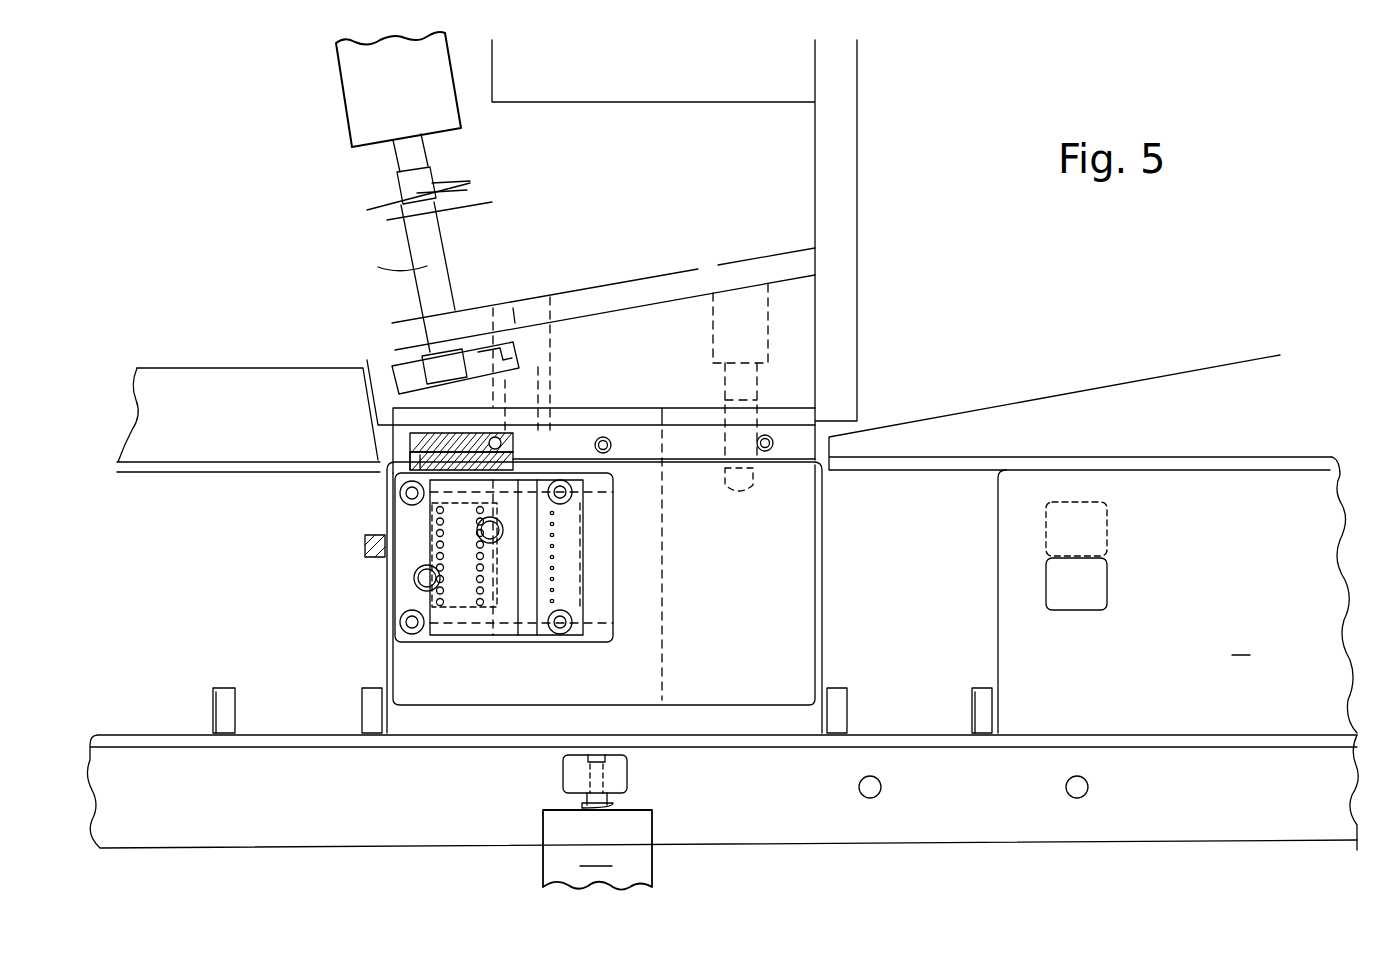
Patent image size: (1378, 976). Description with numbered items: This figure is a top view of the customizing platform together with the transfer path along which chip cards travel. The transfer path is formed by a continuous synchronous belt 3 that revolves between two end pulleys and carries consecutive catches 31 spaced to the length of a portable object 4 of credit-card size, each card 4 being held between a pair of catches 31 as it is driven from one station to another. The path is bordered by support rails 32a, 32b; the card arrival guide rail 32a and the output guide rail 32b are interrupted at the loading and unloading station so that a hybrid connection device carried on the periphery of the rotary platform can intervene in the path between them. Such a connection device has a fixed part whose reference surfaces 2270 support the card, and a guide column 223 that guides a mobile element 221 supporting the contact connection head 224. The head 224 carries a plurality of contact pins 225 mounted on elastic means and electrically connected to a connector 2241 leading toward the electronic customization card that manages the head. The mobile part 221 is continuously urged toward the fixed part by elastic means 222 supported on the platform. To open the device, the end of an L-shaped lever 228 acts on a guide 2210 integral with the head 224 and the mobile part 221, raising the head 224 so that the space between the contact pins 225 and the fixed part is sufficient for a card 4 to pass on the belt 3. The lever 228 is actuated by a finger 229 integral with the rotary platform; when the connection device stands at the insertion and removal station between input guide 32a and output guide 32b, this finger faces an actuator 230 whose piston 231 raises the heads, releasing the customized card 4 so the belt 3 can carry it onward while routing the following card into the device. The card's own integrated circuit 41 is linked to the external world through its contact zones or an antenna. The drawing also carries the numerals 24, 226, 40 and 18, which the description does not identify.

The actuator 230 is at (355, 87).
The piston 231 is at (398, 155).
The finger 229 is at (352, 263).
The L-shaped lever 228 is at (397, 402).
The cover 24 is at (530, 87).
The bearing 226 is at (497, 437).
The guide column 223 is at (513, 453).
The guide 2210 is at (407, 463).
The reference surfaces 2270 is at (747, 460).
The card arrival guide rail 32a is at (161, 438).
The output guide rail 32b is at (903, 452).
The chip card 4 is at (730, 720).
The integrated circuit 41 is at (1095, 538).
The lower pad 40 is at (1095, 590).
The catches 31 is at (368, 705).
The continuous synchronous belt 3 is at (930, 740).
The adjusting knob 18 is at (597, 822).
The mobile element 221 is at (790, 612).
The connector 2241 is at (555, 577).
The contact pins 225 is at (432, 527).
The contact connection head 224 is at (460, 597).
The elastic means 222 is at (428, 575).